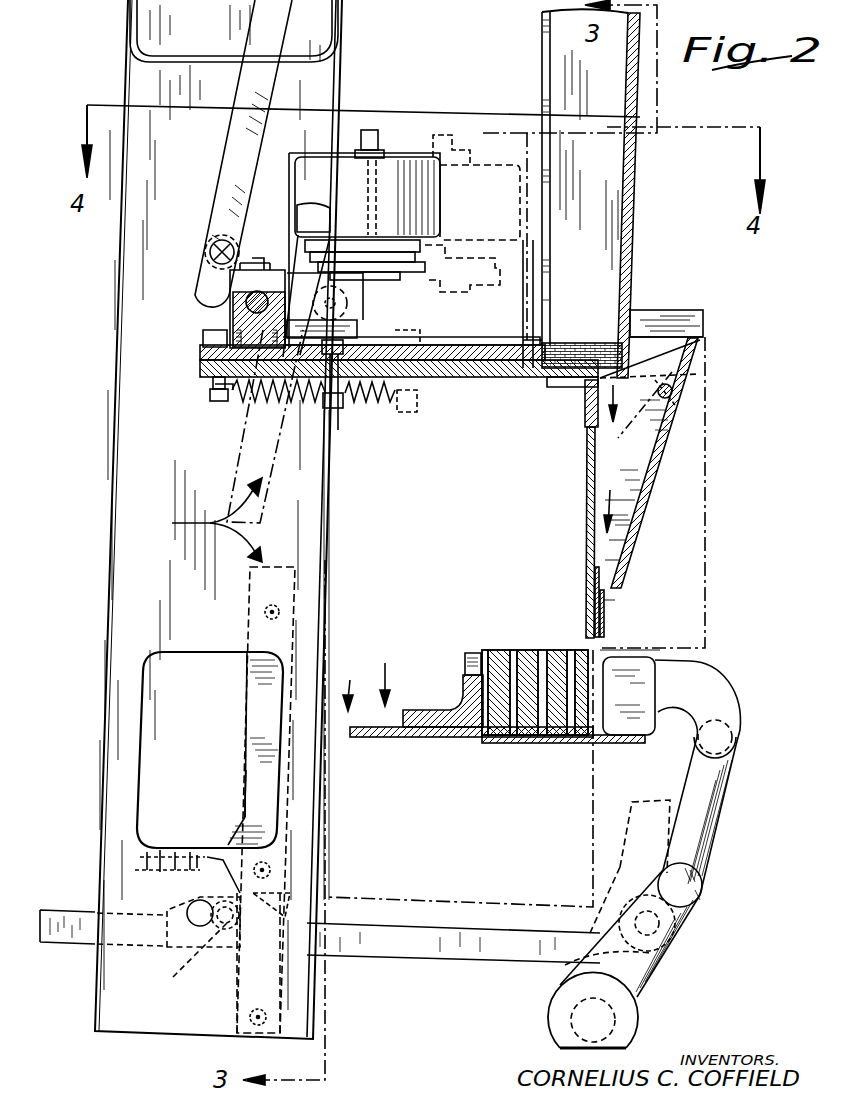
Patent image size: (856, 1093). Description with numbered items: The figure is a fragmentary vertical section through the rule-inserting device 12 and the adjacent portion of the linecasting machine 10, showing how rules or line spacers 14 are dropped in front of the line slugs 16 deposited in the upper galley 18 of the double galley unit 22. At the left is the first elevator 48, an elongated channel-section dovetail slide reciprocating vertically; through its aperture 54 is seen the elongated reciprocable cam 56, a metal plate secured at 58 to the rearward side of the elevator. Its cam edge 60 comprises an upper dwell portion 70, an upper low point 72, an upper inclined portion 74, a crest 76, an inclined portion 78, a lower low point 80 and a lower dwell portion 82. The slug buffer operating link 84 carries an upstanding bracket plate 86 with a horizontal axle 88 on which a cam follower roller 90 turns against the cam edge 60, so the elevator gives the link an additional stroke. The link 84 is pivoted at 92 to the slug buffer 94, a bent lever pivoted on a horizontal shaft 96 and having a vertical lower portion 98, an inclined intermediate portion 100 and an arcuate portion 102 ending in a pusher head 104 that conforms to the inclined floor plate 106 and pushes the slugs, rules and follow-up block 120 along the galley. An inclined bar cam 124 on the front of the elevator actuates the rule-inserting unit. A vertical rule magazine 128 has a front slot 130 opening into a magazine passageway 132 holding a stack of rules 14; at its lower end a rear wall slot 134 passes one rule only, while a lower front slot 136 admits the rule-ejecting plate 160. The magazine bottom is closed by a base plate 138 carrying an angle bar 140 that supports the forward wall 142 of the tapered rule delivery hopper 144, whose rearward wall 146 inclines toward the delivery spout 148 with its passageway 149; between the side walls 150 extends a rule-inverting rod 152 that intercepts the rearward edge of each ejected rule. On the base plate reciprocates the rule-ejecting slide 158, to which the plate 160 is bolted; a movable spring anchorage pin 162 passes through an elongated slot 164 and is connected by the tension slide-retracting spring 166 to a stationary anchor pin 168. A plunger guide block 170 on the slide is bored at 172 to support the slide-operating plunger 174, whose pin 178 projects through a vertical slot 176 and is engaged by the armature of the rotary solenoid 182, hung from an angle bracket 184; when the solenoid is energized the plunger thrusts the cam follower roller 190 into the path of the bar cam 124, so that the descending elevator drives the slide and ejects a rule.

The linecasting machine 10 is at (668, 115).
The rule-inserting device 12 is at (202, 520).
The rules or line spacers 14 is at (570, 345).
The line slugs 16 is at (500, 650).
The upper galley 18 is at (378, 667).
The double galley unit 22 is at (347, 683).
The first elevator 48 is at (128, 22).
The aperture 54 is at (160, 650).
The elongated reciprocable cam 56 is at (246, 738).
The bolted securement 58 is at (250, 606).
The cam edge 60 is at (247, 685).
The upper dwell portion 70 is at (245, 778).
The upper low point 72 is at (245, 815).
The upper inclined portion 74 is at (232, 836).
The high point or crest 76 is at (140, 857).
The inclined portion 78 is at (145, 876).
The lower low point 80 is at (273, 887).
The lower dwell portion 82 is at (235, 1014).
The slug buffer operating link 84 is at (437, 925).
The bracket plate 86 is at (300, 892).
The axle 88 is at (185, 957).
The cam follower roller 90 is at (177, 977).
The pivot 92 is at (690, 945).
The slug buffer 94 is at (698, 917).
The horizontal shaft 96 is at (556, 1003).
The lower portion 98 is at (685, 940).
The intermediate portion 100 is at (725, 760).
The arcuate portion 102 is at (718, 688).
The pusher head 104 is at (652, 740).
The floor plate 106 is at (490, 740).
The follow-up block 120 is at (445, 700).
The inclined bar cam 124 is at (246, 128).
The rule magazine or chute 128 is at (538, 12).
The vertical slot 130 is at (542, 34).
The magazine passageway 132 is at (625, 200).
The rear wall slot 134 is at (680, 362).
The lower front slot 136 is at (530, 342).
The base plate 138 is at (517, 383).
The angle bar 140 is at (575, 383).
The forward wall 142 is at (586, 494).
The rule delivery hopper 144 is at (698, 312).
The rearward wall 146 is at (665, 425).
The rule delivery spout 148 is at (603, 598).
The rule delivery passageway 149 is at (606, 614).
The side walls 150 is at (660, 310).
The rule-inverting rod 152 is at (680, 393).
The rule-ejecting slide 158 is at (217, 349).
The rule-ejecting plate 160 is at (468, 347).
The movable spring anchorage pin 162 is at (345, 415).
The elongated slot 164 is at (388, 405).
The slide-retracting spring 166 is at (240, 400).
The stationary anchor pin 168 is at (208, 398).
The plunger guide block 170 is at (213, 277).
The transverse bore 172 is at (240, 305).
The slide-operating plunger 174 is at (223, 321).
The vertical slot 176 is at (215, 226).
The pin 178 is at (253, 240).
The rotary solenoid 182 is at (342, 170).
The angle bracket 184 is at (289, 158).
The cam follower roller 190 is at (247, 300).